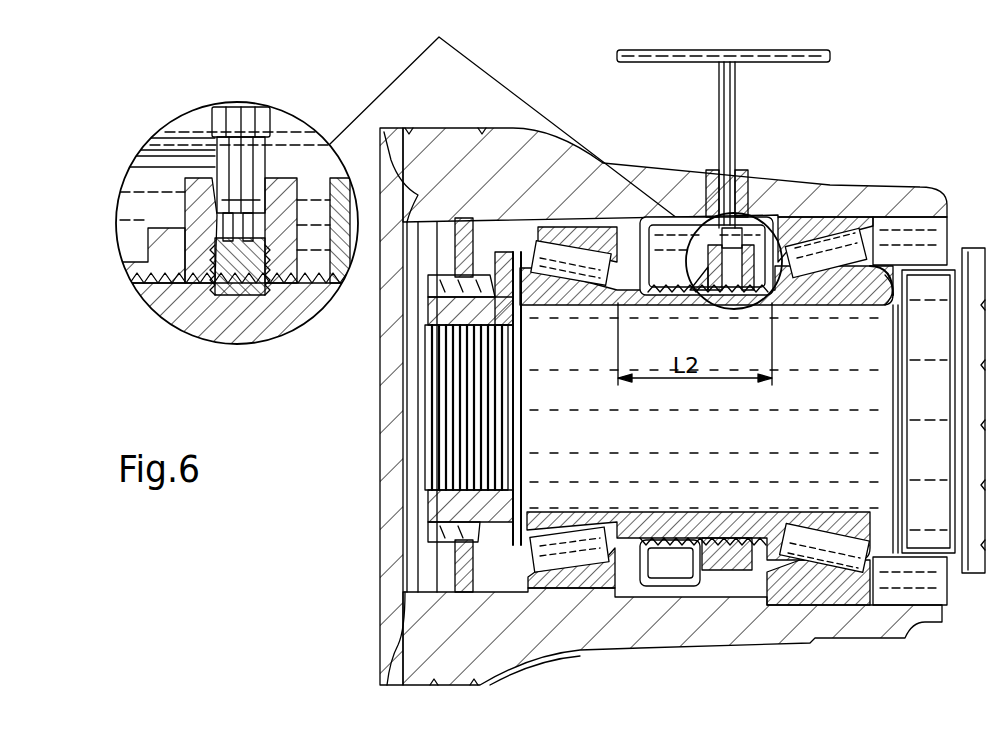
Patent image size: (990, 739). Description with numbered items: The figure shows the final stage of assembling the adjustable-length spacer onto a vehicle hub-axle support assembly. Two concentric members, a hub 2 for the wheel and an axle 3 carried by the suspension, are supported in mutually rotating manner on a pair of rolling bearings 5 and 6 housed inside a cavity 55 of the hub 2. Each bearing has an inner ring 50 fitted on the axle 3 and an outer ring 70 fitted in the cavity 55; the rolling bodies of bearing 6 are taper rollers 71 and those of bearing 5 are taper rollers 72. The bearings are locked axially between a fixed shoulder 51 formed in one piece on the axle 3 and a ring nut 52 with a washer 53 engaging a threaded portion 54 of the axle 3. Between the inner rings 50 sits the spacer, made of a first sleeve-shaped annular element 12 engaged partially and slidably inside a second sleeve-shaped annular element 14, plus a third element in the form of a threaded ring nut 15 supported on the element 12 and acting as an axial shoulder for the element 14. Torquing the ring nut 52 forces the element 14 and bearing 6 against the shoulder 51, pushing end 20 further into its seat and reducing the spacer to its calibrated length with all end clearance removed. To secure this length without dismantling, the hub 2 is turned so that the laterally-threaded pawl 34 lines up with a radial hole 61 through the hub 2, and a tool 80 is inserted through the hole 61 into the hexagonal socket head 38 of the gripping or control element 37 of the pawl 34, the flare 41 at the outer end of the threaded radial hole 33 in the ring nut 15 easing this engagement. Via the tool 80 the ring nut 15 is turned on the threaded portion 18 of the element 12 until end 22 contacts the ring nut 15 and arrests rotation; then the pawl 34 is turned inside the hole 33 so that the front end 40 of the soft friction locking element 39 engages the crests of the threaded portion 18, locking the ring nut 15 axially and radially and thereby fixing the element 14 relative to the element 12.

The hub 2 is at (535, 187).
The axle 3 is at (862, 474).
The rolling bearing 5 is at (560, 305).
The rolling bearing 6 is at (810, 225).
The first sleeve-shaped annular element 12 is at (743, 305).
The second sleeve-shaped annular element 14 is at (645, 300).
The threaded ring nut 15 is at (740, 540).
The threaded portion 18 is at (303, 274).
The end 20 is at (677, 518).
The end 22 is at (653, 520).
The threaded radial hole 33 is at (227, 260).
The laterally-threaded pawl 34 is at (267, 307).
The gripping or control element 37 is at (258, 237).
The hexagonal socket head 38 is at (203, 195).
The friction locking element 39 is at (233, 293).
The front end 40 is at (232, 300).
The flare 41 is at (290, 172).
The inner rings 50 is at (820, 295).
The fixed shoulder 51 is at (890, 297).
The ring nut 52 is at (530, 350).
The washer 53 is at (527, 477).
The threaded portion 54 is at (447, 447).
The cavity 55 is at (657, 568).
The radial hole 61 is at (748, 185).
The outer rings 70 is at (595, 227).
The taper rollers 71 is at (850, 250).
The taper rollers 72 is at (553, 560).
The tool 80 is at (712, 50).